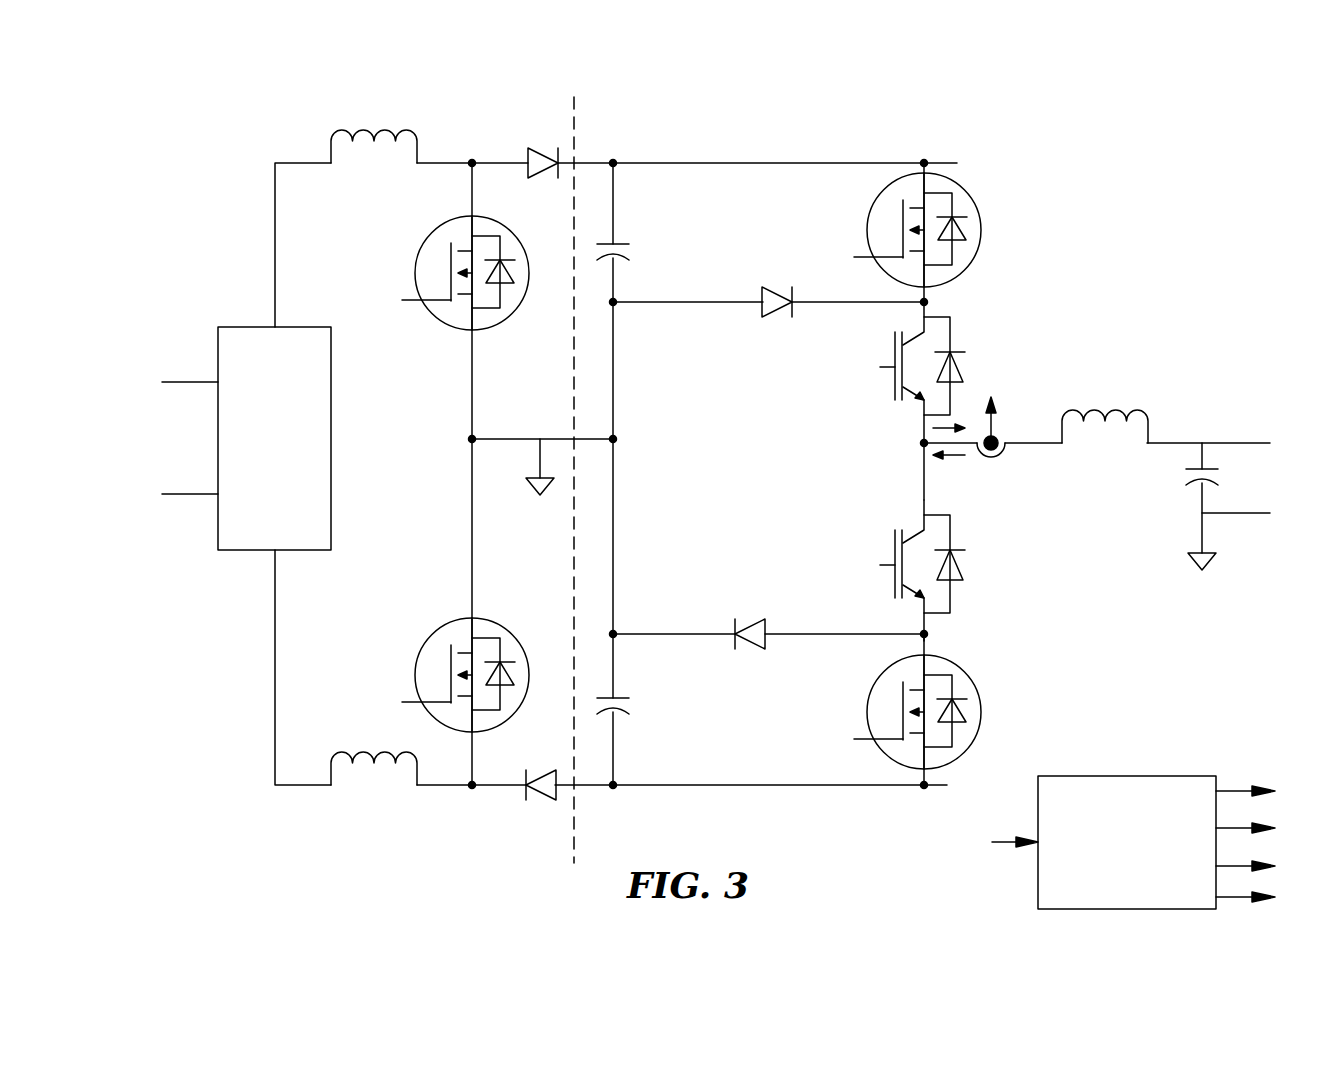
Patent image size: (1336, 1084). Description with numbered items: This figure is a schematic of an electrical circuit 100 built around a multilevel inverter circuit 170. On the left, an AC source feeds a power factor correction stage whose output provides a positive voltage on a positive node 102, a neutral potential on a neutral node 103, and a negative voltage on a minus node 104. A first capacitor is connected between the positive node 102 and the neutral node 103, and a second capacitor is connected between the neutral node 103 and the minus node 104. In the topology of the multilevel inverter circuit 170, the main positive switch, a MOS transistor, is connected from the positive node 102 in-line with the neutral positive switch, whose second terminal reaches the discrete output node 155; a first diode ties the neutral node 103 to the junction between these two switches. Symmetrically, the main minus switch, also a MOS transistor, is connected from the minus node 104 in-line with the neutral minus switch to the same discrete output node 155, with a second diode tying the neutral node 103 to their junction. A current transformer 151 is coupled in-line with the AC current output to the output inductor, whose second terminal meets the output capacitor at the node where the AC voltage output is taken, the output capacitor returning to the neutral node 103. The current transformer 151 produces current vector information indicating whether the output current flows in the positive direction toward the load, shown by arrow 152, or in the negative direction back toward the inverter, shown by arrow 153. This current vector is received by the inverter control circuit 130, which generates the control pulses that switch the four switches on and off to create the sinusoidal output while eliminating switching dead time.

The power conversion system 100 is at (172, 145).
The multilevel inverter circuit 170 is at (826, 143).
The positive node 102 is at (616, 166).
The neutral node 103 is at (616, 441).
The minus node 104 is at (614, 788).
The discrete output node 155 is at (921, 445).
The arrow 152 is at (948, 426).
The arrow 153 is at (953, 459).
The current transformer 151 is at (999, 428).
The inverter control circuit 130 is at (1153, 776).